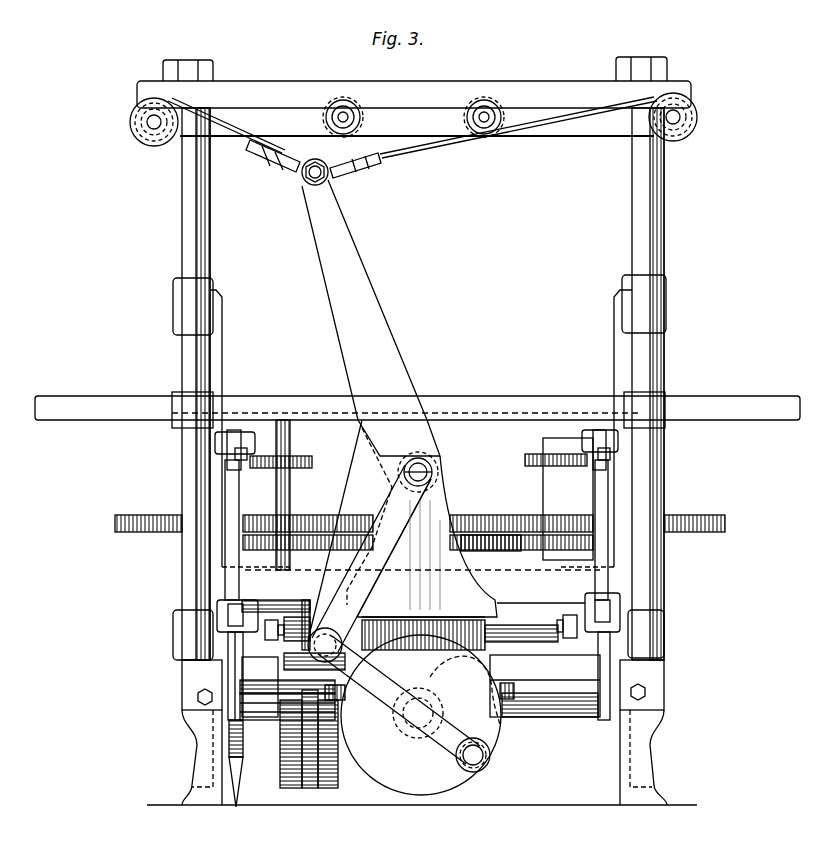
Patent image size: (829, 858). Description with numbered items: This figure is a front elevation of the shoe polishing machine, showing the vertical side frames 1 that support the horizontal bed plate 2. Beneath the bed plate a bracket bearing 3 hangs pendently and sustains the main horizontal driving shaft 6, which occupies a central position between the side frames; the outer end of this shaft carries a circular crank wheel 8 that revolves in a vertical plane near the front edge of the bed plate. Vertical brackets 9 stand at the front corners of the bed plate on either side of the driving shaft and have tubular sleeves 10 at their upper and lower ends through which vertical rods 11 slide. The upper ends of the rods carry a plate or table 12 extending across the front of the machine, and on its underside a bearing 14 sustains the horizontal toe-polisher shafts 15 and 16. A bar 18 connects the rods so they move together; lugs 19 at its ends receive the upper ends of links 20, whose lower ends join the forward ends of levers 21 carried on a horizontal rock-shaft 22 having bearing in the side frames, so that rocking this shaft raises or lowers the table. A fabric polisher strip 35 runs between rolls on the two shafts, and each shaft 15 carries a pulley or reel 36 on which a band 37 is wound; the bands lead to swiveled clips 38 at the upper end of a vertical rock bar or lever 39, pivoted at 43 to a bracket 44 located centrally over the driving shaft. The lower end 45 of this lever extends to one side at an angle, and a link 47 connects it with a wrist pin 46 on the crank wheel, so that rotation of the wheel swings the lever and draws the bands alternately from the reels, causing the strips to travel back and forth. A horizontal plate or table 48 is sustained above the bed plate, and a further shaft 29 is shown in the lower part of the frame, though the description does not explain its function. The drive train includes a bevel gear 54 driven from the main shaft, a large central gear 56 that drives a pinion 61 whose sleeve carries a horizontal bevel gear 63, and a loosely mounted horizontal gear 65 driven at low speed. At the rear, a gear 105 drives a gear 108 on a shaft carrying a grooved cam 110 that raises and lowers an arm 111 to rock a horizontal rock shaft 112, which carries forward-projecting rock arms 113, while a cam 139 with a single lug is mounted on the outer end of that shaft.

The vertical side frames 1 is at (667, 738).
The horizontal bed plate 2 is at (562, 600).
The bracket bearing 3 is at (462, 630).
The main horizontal driving shaft 6 is at (412, 722).
The circular crank wheel 8 is at (421, 715).
The vertical brackets 9 is at (592, 365).
The tubular sleeves 10 is at (690, 628).
The rods 11 is at (680, 236).
The plate or table 12 is at (414, 82).
The bearing 14 is at (512, 97).
The toe-polisher shaft 15 is at (715, 117).
The toe-polisher shaft 16 is at (466, 98).
The bar 18 is at (465, 398).
The lugs 19 is at (672, 432).
The links 20 is at (672, 483).
The levers 21 is at (675, 674).
The horizontal rock-shaft 22 is at (298, 687).
The shaft 29 is at (548, 700).
The flexible band or fabric strip 35 is at (596, 138).
The pulley or reel 36 is at (700, 145).
The band 37 is at (586, 115).
The swiveled clips 38 is at (392, 185).
The vertical rock bar or lever 39 is at (343, 222).
The pivot 43 is at (425, 470).
The bracket 44 is at (404, 554).
The lower end of rock bar 45 is at (372, 510).
The wrist pin 46 is at (478, 757).
The link 47 is at (395, 690).
The horizontal plate or table 48 is at (760, 410).
The bevel gear 54 is at (507, 683).
The large gear 56 is at (490, 540).
The pinion 61 is at (675, 545).
The horizontal bevel gear 63 is at (530, 470).
The horizontal gear 65 is at (745, 522).
The gear 105 is at (310, 788).
The gear 108 is at (290, 788).
The cam 110 is at (334, 788).
The arm 111 is at (300, 600).
The horizontal rock shaft 112 is at (514, 625).
The lever or rock arms 113 is at (560, 660).
The cam 139 is at (236, 790).